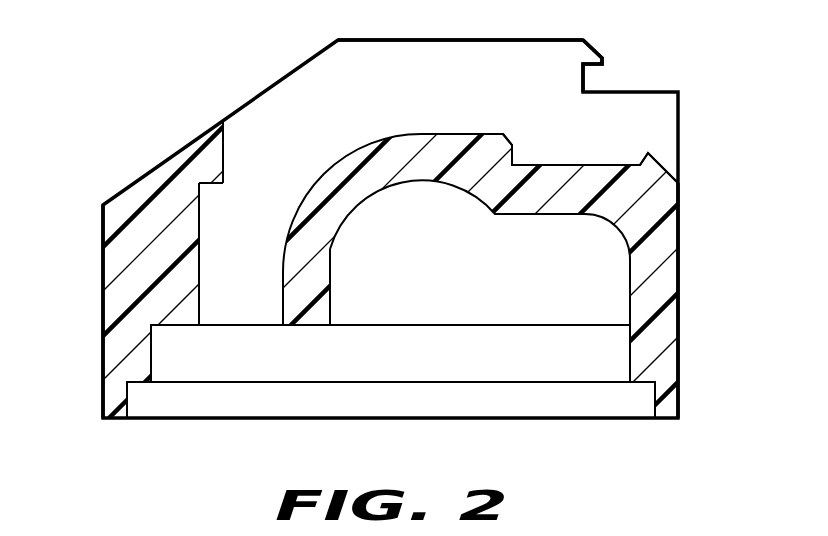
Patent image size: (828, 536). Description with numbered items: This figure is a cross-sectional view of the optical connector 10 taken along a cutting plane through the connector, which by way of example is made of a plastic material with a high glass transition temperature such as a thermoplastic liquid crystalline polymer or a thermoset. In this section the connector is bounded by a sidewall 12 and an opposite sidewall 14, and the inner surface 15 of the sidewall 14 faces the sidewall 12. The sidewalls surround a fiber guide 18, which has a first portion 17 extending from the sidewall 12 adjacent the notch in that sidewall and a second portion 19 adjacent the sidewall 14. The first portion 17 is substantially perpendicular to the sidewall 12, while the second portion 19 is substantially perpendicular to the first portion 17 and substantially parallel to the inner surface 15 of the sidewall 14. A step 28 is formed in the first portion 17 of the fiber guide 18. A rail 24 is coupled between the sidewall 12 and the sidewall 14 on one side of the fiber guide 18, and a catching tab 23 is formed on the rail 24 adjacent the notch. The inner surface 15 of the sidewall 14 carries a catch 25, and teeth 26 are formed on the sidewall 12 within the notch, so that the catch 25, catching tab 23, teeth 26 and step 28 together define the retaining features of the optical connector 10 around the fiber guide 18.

The optical connector 10 is at (604, 507).
The sidewall 12 is at (678, 271).
The sidewall 14 is at (103, 311).
The inner surface 15 is at (199, 252).
The first portion 17 is at (556, 214).
The fiber guide 18 is at (412, 143).
The second portion 19 is at (331, 302).
The catching tab 23 is at (598, 44).
The rail 24 is at (461, 39).
The catch 25 is at (223, 185).
The teeth 26 is at (603, 160).
The step 28 is at (505, 135).